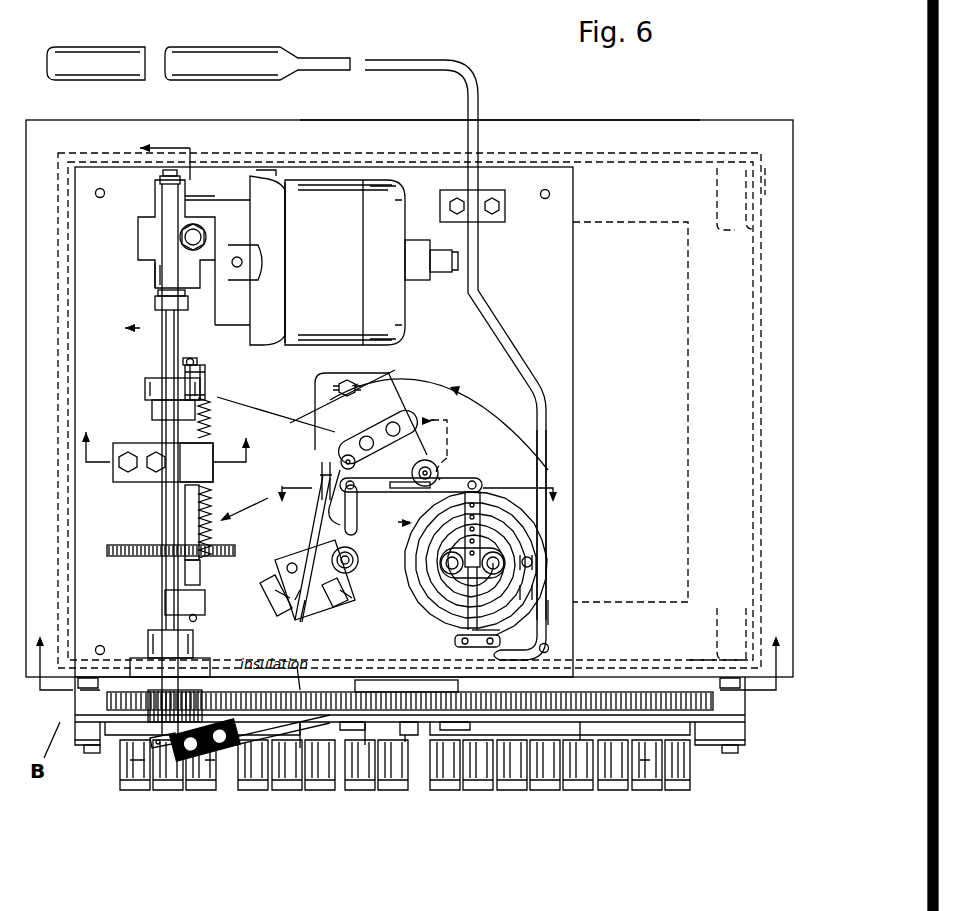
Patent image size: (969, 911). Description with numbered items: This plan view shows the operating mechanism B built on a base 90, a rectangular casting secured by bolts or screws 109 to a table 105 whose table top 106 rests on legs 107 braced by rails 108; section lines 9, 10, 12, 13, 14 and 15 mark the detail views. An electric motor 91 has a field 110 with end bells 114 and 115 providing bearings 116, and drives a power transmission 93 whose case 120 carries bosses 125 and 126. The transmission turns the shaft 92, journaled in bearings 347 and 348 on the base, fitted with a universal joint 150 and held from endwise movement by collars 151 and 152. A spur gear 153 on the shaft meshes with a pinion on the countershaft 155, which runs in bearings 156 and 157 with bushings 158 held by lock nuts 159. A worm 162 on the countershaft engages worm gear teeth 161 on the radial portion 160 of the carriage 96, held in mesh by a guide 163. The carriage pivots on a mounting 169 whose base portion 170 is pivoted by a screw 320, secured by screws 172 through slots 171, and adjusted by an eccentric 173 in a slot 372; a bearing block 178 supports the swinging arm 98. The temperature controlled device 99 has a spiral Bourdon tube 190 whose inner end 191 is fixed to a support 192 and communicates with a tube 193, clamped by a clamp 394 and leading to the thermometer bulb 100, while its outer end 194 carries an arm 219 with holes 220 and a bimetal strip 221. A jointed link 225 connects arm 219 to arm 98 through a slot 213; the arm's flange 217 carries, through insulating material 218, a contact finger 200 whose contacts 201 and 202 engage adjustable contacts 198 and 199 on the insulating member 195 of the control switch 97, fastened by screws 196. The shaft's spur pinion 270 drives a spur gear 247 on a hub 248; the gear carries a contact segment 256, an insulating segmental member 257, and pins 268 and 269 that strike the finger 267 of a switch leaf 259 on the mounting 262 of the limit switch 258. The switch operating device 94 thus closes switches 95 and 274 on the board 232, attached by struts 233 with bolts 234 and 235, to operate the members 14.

The section line 9- 9 is at (405, 648).
The section line 10- 10 is at (145, 238).
The section line 12- 12 is at (377, 444).
The section line 13- 13 is at (168, 447).
The members 14 is at (425, 504).
The section line 15- 15 is at (415, 468).
The base 90 is at (557, 272).
The electric motor 91 is at (350, 182).
The shaft 92 is at (162, 488).
The power transmission 93 is at (140, 238).
The switch operating device 94 is at (625, 693).
The switches 95 is at (560, 770).
The carriage 96 is at (275, 425).
The control switch 97 is at (268, 592).
The swinging arm 98 is at (325, 472).
The temperature controlled device 99 is at (536, 488).
The thermometer bulb 100 is at (236, 58).
The table 105 is at (596, 120).
The table top 106 is at (708, 128).
The legs 107 is at (727, 414).
The rails 108 is at (688, 337).
The bolts or screws 109 is at (100, 198).
The field 110 is at (302, 190).
The end bell 114 is at (262, 190).
The end bell 115 is at (388, 185).
The bearings 116 is at (425, 272).
The case 120 is at (158, 196).
The boss 125 is at (150, 283).
The boss 126 is at (185, 197).
The universal joint 150 is at (155, 300).
The collar 151 is at (150, 410).
The collar 152 is at (155, 635).
The spur gear 153 is at (120, 557).
The countershaft 155 is at (200, 572).
The bearing 156 is at (205, 385).
The bearing 157 is at (205, 600).
The bushings 158 is at (190, 358).
The lock nuts 159 is at (200, 378).
The radial portion 160 is at (292, 440).
The worm gear teeth 161 is at (215, 400).
The worm 162 is at (185, 505).
The guide 163 is at (205, 455).
The mounting 169 is at (385, 385).
The base portion 170 is at (395, 400).
The slots 171 is at (354, 386).
The screws 172 is at (340, 383).
The eccentric 173 is at (435, 470).
The bearing block 178 is at (362, 424).
The Bourdon tube 190 is at (440, 623).
The inner end 191 is at (430, 599).
The support 192 is at (520, 548).
The tube 193 is at (545, 620).
The outer end 194 is at (460, 641).
The insulating member 195 is at (325, 622).
The screws 196 is at (280, 560).
The adjustable contact 198 is at (284, 598).
The adjustable contact 199 is at (345, 607).
The contact finger 200 is at (360, 560).
The contact 201 is at (296, 622).
The contact 202 is at (325, 603).
The slot 213 is at (360, 515).
The flange 217 is at (325, 540).
The insulating material 218 is at (290, 484).
The arm 219 is at (498, 653).
The holes 220 is at (481, 532).
The bimetal strip 221 is at (500, 595).
The jointed link 225 is at (480, 480).
The board 232 is at (690, 736).
The struts 233 is at (75, 703).
The bolts 234 is at (742, 688).
The bolts 235 is at (88, 754).
The spur gear 247 is at (500, 702).
The hub 248 is at (365, 680).
The contact segment 256 is at (372, 712).
The segmental member 257 is at (585, 712).
The limit switch 258 is at (185, 750).
The switch leaf 259 is at (258, 735).
The mounting 262 is at (242, 742).
The finger 267 is at (300, 748).
The pin 268 is at (455, 730).
The pin 269 is at (352, 730).
The spur pinion 270 is at (150, 718).
The switches 274 is at (150, 766).
The screw 320 is at (371, 564).
The bearing 347 is at (148, 390).
The bearing 348 is at (135, 660).
The slot 372 is at (443, 458).
The clamp 394 is at (478, 188).